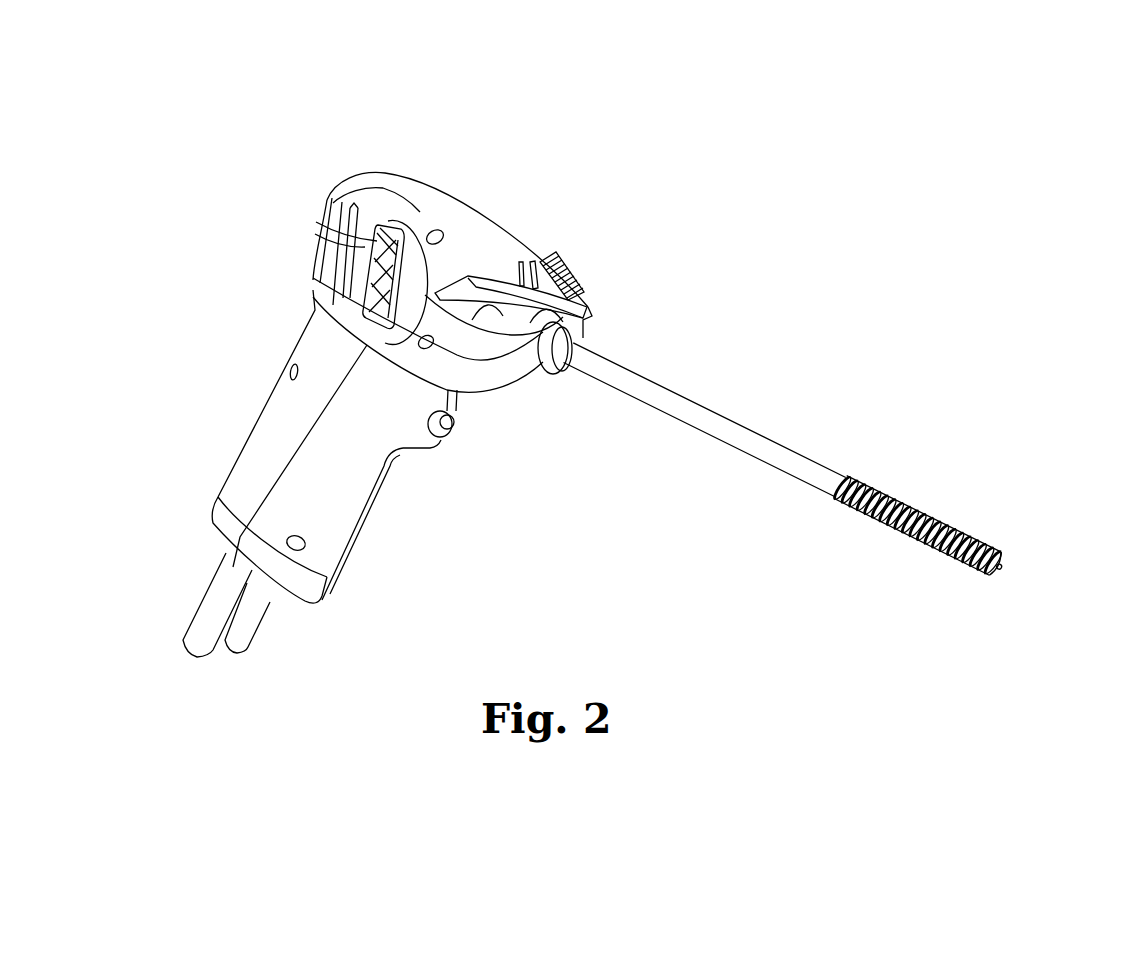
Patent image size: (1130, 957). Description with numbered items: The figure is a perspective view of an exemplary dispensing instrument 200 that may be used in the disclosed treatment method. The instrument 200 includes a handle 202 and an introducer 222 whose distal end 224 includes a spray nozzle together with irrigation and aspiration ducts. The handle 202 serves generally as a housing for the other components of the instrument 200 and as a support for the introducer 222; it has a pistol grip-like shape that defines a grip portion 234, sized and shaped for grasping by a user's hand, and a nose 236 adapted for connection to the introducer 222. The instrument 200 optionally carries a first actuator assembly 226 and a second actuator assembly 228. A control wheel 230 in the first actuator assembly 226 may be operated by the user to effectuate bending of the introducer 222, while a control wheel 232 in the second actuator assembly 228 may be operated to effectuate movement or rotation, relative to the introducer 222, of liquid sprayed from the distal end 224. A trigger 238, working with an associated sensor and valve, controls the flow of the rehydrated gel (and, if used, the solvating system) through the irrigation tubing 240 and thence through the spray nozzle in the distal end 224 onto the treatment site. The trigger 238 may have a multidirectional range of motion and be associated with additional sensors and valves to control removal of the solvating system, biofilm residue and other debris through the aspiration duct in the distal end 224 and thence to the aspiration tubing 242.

The instrument 200 is at (237, 138).
The handle 202 is at (235, 437).
The introducer 222 is at (767, 393).
The distal end 224 is at (1002, 567).
The first actuator assembly 226 is at (592, 283).
The second actuator assembly 228 is at (400, 226).
The control wheel 230 is at (513, 312).
The control wheel 232 is at (380, 297).
The grip portion 234 is at (332, 499).
The nose 236 is at (557, 365).
The trigger 238 is at (455, 424).
The irrigation tubing 240 is at (200, 629).
The aspiration tubing 242 is at (240, 635).